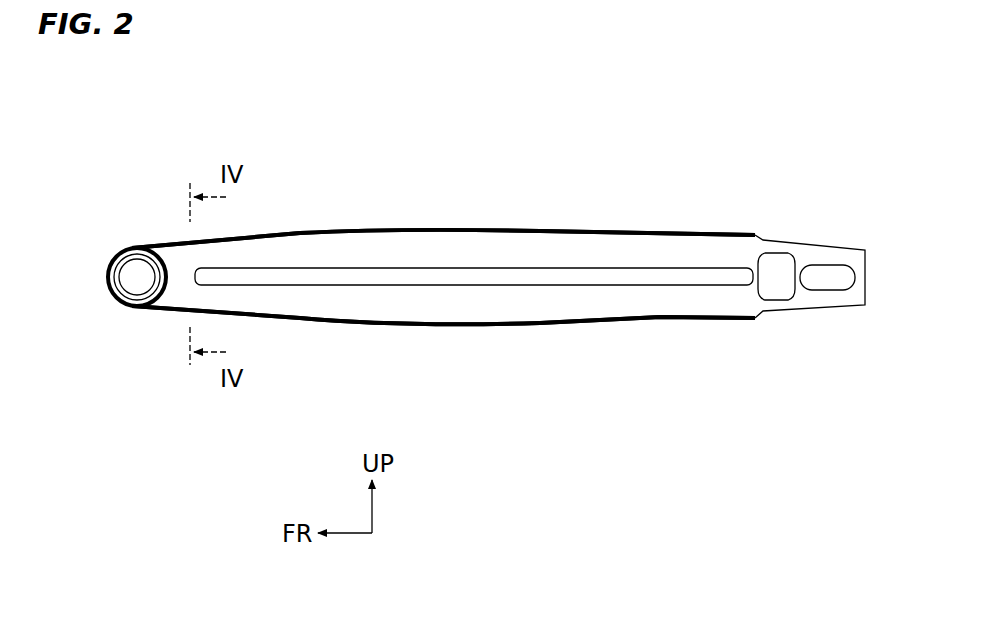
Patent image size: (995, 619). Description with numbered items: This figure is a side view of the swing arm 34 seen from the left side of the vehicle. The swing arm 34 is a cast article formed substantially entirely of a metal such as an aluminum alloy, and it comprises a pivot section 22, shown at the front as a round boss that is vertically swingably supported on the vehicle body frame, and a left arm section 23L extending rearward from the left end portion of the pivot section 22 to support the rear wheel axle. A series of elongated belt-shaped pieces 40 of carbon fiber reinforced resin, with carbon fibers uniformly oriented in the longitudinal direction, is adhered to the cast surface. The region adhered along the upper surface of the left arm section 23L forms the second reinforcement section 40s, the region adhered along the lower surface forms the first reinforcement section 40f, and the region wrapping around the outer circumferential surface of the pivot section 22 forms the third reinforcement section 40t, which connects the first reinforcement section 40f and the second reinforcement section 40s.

The pivot section 22 is at (122, 258).
The left arm section 23L is at (372, 240).
The swing arm 34 is at (610, 180).
The belt-shaped piece 40 is at (465, 270).
The second reinforcement section 40s is at (497, 232).
The first reinforcement section 40f is at (557, 323).
The third reinforcement section 40t is at (128, 305).